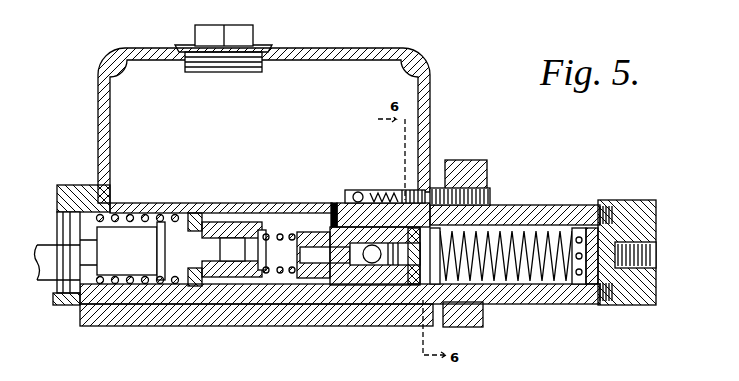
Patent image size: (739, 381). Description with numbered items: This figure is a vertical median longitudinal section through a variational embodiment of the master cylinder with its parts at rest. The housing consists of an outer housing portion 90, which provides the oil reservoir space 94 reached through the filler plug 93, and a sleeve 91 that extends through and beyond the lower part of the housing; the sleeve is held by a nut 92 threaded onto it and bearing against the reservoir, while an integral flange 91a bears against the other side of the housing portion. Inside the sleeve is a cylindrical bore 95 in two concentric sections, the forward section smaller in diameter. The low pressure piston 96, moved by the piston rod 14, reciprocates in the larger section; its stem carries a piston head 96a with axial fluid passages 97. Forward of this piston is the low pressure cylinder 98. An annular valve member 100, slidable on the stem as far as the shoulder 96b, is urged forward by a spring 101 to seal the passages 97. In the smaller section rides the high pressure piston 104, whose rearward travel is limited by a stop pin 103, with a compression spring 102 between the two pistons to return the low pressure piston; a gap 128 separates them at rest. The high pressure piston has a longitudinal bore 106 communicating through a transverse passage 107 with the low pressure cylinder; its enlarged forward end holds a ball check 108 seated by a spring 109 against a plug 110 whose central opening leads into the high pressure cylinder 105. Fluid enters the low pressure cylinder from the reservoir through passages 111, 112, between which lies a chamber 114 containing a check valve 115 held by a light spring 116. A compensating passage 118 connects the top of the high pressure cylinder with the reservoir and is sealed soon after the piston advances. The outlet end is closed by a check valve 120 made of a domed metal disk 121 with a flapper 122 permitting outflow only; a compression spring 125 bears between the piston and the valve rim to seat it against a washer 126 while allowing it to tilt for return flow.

The piston rod 14 is at (47, 262).
The outer housing portion 90 is at (396, 52).
The sleeve 91 is at (548, 203).
The integral flange 91a is at (66, 187).
The nut 92 is at (470, 160).
The filler plug 93 is at (243, 28).
The oil reservoir space 94 is at (126, 107).
The cylindrical bore 95 is at (346, 287).
The low pressure piston 96 is at (122, 230).
The piston head 96a is at (260, 272).
The shoulder 96b is at (162, 282).
The fluid passages 97 is at (223, 222).
The low pressure cylinder 98 is at (293, 280).
The valve member 100 is at (193, 288).
The spring 101 is at (170, 213).
The compression spring 102 is at (282, 233).
The stop pin 103 is at (331, 218).
The high pressure piston 104 is at (412, 286).
The high pressure cylinder 105 is at (520, 284).
The longitudinal bore 106 is at (330, 265).
The transverse passage 107 is at (312, 264).
The ball check 108 is at (370, 264).
The spring 109 is at (392, 266).
The plug 110 is at (465, 304).
The passage 111 is at (357, 192).
The passage 112 is at (348, 196).
The chamber 114 is at (384, 191).
The check valve 115 is at (364, 190).
The spring 116 is at (395, 190).
The passage 118 is at (440, 188).
The check valve 120 is at (578, 228).
The domed metal disk 121 is at (590, 286).
The flapper 122 is at (615, 256).
The compression spring 125 is at (548, 284).
The washer 126 is at (596, 210).
The gap 128 is at (265, 233).